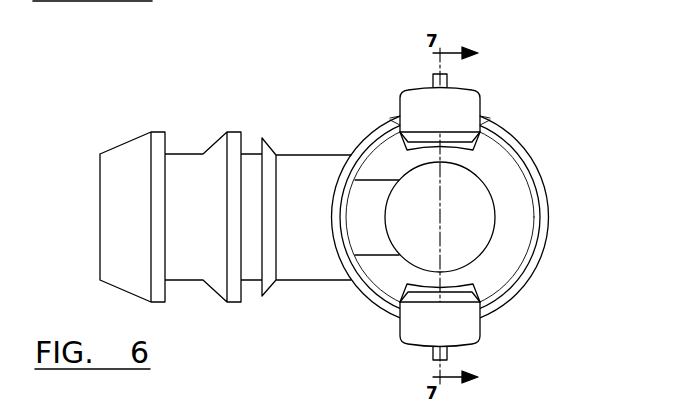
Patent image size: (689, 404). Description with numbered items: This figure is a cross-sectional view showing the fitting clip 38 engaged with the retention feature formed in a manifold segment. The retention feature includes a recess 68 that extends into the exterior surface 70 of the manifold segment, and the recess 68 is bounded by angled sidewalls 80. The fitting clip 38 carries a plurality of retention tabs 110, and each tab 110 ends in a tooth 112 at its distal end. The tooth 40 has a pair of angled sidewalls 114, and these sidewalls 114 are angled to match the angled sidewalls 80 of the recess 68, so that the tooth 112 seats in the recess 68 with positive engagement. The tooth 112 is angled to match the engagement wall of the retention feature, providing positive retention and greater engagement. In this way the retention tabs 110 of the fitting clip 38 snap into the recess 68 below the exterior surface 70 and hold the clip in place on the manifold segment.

The tooth 40 is at (127, 167).
The exterior surface 70 is at (552, 221).
The fitting clip 38 is at (442, 190).
The retention tabs 110 is at (484, 104).
The tooth 112 is at (420, 112).
The angled sidewalls 114 is at (402, 131).
The recess 68 is at (443, 147).
The angled sidewalls 80 is at (403, 126).